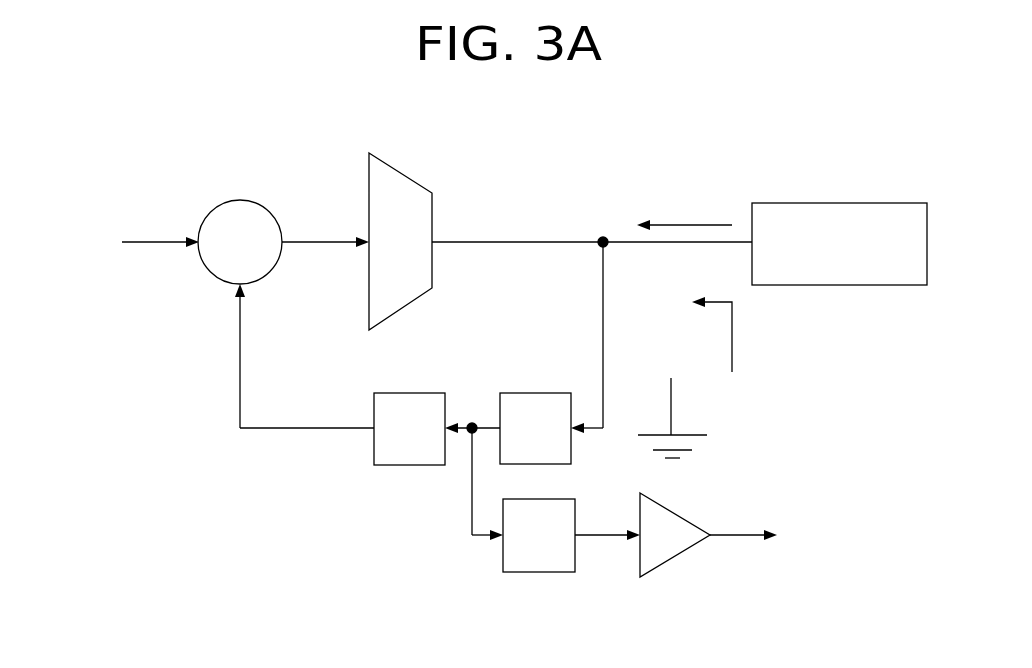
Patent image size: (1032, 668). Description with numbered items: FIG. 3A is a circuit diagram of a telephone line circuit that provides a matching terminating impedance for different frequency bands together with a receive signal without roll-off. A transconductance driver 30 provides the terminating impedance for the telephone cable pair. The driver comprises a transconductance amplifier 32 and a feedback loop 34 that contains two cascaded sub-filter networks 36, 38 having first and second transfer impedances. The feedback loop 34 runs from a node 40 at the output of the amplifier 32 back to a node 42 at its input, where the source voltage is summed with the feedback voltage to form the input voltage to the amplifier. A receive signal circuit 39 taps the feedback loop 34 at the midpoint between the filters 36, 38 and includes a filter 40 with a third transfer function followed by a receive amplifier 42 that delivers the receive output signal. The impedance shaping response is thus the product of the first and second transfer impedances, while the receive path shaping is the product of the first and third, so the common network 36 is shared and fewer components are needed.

The transconductance driver 30 is at (236, 153).
The transconductance amplifier 32 is at (397, 172).
The feedback loop 34 is at (240, 372).
The sub-filter network 36 is at (528, 392).
The sub-filter network 38 is at (410, 393).
The receive signal circuit 39 is at (448, 502).
The node at amplifier output / filter 40 is at (603, 236).
The node at amplifier input / receive amplifier 42 is at (217, 279).